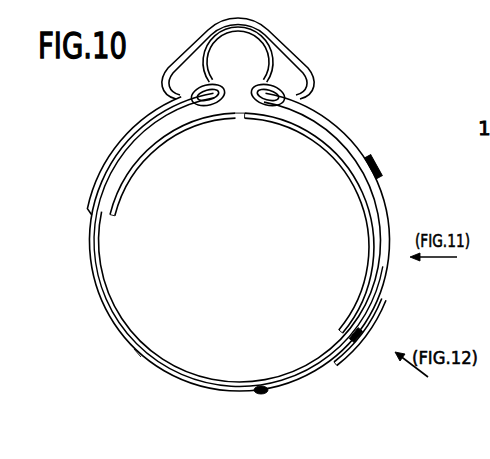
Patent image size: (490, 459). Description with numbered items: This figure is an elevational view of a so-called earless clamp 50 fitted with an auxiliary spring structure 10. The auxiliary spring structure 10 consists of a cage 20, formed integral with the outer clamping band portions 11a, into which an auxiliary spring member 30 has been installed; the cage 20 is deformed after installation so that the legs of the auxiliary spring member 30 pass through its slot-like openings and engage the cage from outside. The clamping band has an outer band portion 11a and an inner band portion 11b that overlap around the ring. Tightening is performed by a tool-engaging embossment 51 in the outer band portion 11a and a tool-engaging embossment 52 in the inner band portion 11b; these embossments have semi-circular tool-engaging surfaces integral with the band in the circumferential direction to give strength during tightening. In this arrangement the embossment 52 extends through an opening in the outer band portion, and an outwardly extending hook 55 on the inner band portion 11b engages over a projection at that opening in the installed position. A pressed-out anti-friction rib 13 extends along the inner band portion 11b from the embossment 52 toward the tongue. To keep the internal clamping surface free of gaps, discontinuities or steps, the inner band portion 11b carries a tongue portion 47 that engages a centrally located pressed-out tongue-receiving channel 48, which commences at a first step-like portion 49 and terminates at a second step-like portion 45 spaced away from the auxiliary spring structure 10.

The auxiliary spring structure 10 is at (193, 39).
The cage 20 is at (286, 44).
The auxiliary spring member 30 is at (263, 53).
The outer clamping band portion 11a is at (154, 122).
The inner band portion 11b is at (256, 128).
The anti-friction rib 13 is at (302, 113).
The second step-like portion 45 is at (137, 352).
The tongue portion 47 is at (139, 175).
The pressed-out tongue-receiving channel 48 is at (89, 265).
The first step-like portion 49 is at (90, 212).
The earless clamp 50 is at (146, 370).
The tool-engaging embossment 51 is at (378, 161).
The tool-engaging embossment 52 is at (364, 320).
The outwardly extending hook 55 is at (263, 392).